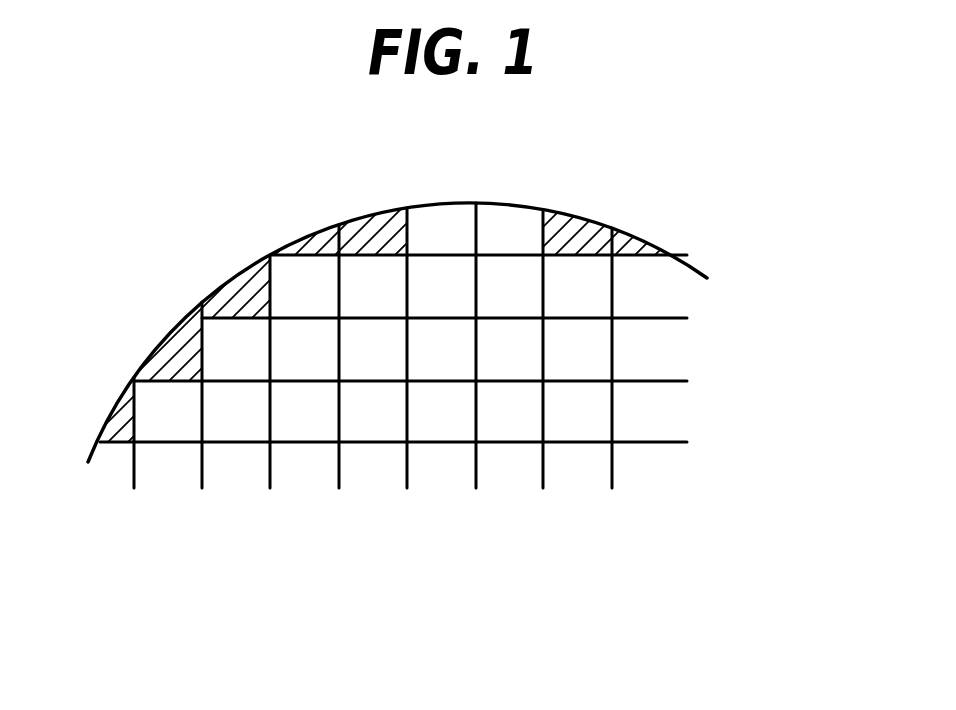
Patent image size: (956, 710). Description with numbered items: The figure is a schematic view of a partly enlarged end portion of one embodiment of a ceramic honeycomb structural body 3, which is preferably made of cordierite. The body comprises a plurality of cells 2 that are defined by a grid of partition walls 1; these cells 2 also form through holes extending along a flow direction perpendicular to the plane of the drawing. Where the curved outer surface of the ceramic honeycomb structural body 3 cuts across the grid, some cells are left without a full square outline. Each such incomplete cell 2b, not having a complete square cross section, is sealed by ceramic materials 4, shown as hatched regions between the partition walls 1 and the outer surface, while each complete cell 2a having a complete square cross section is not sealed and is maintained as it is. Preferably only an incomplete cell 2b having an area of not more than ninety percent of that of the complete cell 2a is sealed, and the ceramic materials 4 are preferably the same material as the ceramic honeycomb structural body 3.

The partition wall 1 is at (543, 347).
The cell 2 is at (435, 420).
The complete cell 2a is at (371, 348).
The incomplete cell 2b is at (327, 234).
The ceramic honeycomb structural body 3 is at (710, 265).
The ceramic material 4 is at (580, 232).